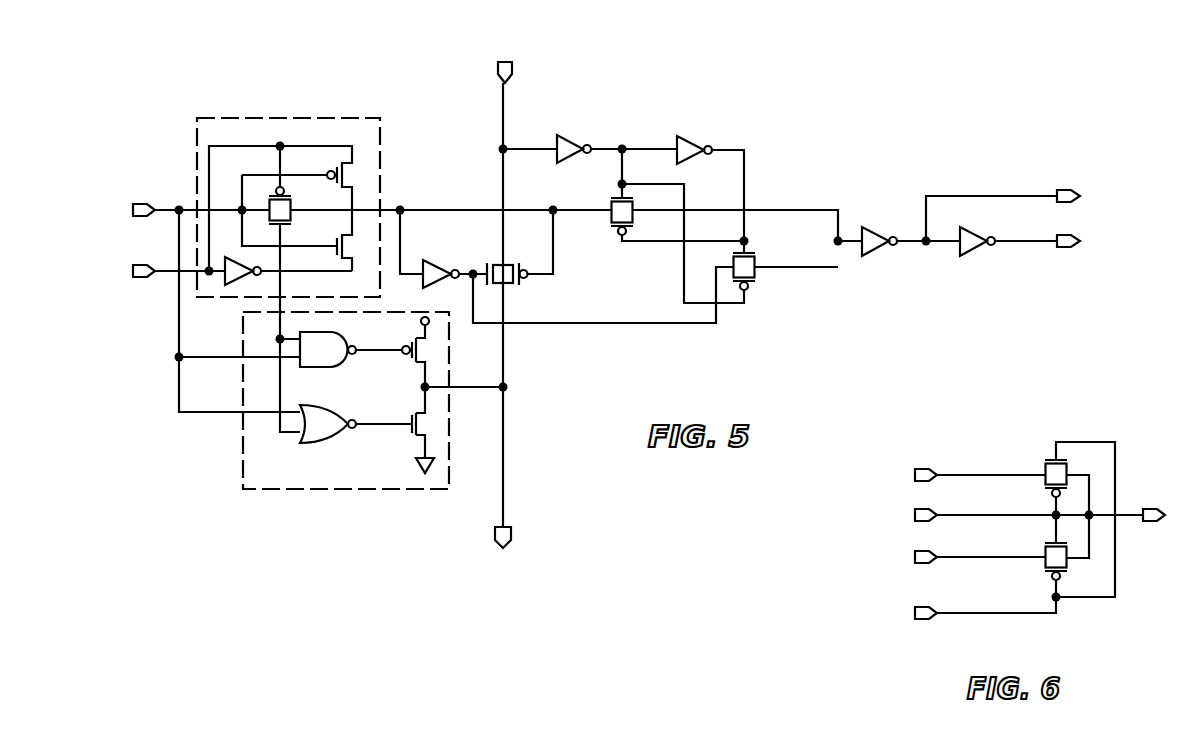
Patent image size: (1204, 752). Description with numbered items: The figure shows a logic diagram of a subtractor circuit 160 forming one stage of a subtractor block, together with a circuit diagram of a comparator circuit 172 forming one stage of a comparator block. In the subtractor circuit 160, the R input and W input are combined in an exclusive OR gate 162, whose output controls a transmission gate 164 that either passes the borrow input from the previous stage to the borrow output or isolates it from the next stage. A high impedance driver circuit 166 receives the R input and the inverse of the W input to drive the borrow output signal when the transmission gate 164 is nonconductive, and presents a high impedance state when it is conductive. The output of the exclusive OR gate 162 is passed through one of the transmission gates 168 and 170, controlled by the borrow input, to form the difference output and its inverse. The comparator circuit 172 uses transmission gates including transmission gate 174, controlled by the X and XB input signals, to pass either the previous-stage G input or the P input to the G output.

In FIG. 5, the subtractor circuit 160 is at (160, 74).
In FIG. 5, the exclusive OR gate 162 is at (297, 118).
In FIG. 5, the transmission gate 164 is at (506, 286).
In FIG. 5, the high impedance driver circuit 166 is at (343, 490).
In FIG. 5, the transmission gate 168 is at (611, 205).
In FIG. 5, the transmission gate 170 is at (757, 272).
In FIG. 6, the comparator circuit 172 is at (958, 419).
In FIG. 6, the transmission gate 174 is at (1044, 470).